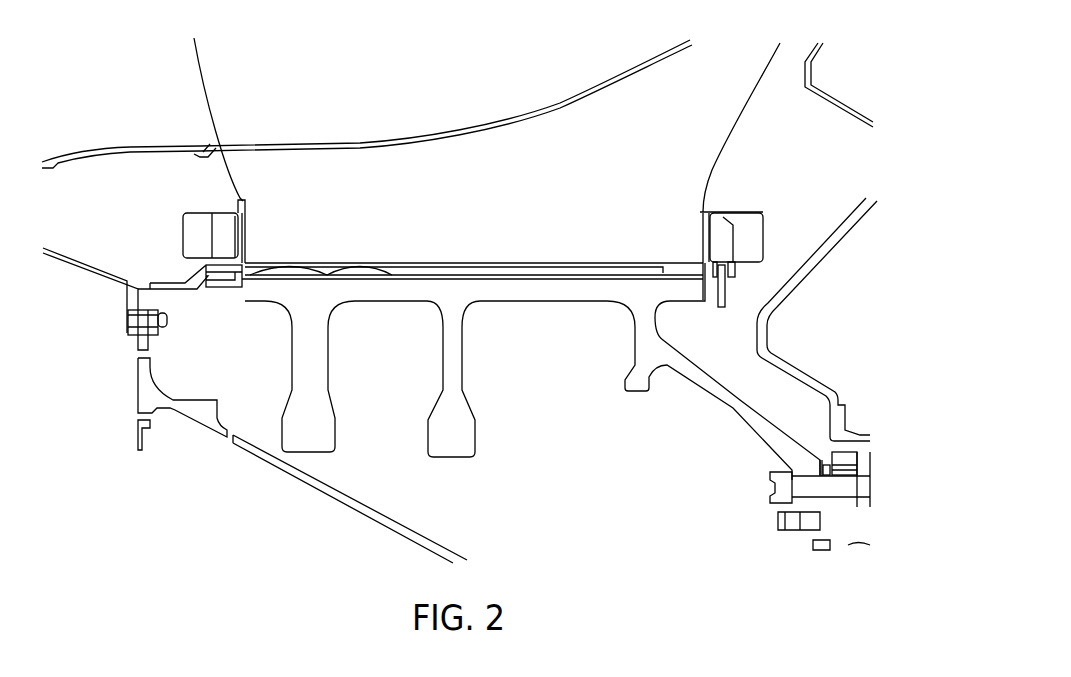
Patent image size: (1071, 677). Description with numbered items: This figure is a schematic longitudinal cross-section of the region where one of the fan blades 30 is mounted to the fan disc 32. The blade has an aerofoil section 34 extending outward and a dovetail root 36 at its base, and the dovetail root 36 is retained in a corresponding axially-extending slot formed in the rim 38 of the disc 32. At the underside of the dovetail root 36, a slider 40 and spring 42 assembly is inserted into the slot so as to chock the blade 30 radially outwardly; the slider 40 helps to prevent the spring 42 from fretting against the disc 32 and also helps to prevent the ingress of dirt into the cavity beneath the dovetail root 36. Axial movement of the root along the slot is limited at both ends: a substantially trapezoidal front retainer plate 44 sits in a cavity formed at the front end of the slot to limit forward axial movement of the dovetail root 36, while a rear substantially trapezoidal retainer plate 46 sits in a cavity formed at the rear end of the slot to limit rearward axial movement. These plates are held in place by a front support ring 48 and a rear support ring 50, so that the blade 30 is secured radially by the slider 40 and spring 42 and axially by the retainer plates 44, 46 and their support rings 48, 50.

The fan blade 30 is at (741, 160).
The fan disc 32 is at (499, 431).
The aerofoil section 34 is at (467, 94).
The dovetail root 36 is at (475, 237).
The rim 38 is at (465, 307).
The slider 40 is at (533, 276).
The spring 42 is at (323, 267).
The front retainer plate 44 is at (222, 213).
The rear retainer plate 46 is at (718, 212).
The front support ring 48 is at (163, 283).
The rear support ring 50 is at (728, 295).